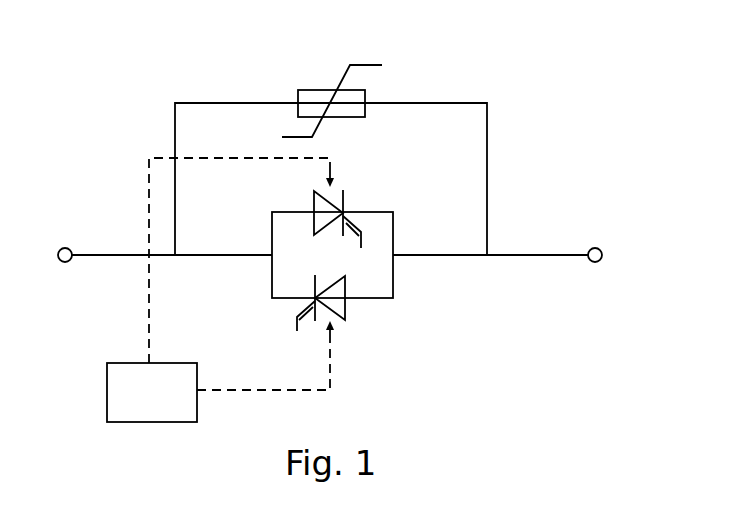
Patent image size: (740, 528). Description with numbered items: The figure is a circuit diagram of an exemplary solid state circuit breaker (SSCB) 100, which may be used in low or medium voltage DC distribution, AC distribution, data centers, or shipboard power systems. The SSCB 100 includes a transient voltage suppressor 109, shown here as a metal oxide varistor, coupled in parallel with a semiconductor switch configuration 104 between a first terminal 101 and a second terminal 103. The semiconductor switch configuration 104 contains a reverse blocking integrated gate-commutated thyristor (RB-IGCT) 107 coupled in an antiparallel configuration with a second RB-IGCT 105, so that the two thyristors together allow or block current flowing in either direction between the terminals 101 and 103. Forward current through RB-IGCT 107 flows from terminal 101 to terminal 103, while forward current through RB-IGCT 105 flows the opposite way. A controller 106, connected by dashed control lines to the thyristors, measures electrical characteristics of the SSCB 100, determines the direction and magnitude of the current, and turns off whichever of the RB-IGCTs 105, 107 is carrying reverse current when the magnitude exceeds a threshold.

The solid state circuit breaker 100 is at (624, 109).
The terminal 101 is at (62, 263).
The terminal 103 is at (592, 263).
The semiconductor switch configuration 104 is at (374, 334).
The reverse blocking integrated gate-commutated thyristor 105 is at (318, 276).
The controller 106 is at (107, 389).
The reverse blocking integrated gate-commutated thyristor 107 is at (348, 191).
The transient voltage suppressor 109 is at (378, 63).